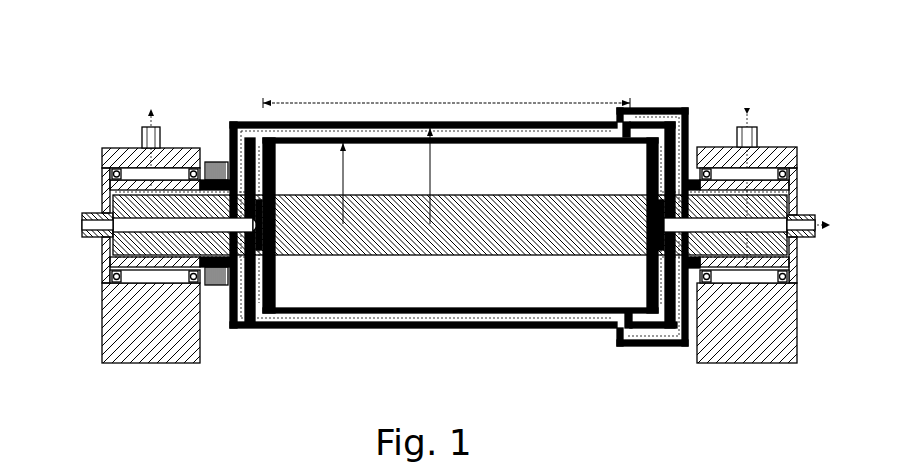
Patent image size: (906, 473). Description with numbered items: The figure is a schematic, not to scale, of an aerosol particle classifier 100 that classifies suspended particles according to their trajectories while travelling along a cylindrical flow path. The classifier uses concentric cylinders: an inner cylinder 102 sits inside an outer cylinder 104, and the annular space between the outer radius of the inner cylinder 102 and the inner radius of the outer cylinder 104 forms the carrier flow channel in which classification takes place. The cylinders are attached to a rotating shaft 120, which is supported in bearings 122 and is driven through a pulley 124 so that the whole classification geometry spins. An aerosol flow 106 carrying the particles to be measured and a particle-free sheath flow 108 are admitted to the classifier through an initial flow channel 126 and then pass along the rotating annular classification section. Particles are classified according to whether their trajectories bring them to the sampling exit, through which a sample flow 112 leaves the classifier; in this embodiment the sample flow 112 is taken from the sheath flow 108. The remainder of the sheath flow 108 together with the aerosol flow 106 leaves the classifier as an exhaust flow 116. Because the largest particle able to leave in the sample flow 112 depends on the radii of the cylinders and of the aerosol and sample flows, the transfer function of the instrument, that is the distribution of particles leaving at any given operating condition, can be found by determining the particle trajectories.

The aerosol particle classifier 100 is at (445, 58).
The inner cylinder 102 is at (468, 314).
The outer cylinder 104 is at (543, 329).
The aerosol flow 106 is at (78, 227).
The sheath flow 108 is at (158, 113).
The sample flow 112 is at (752, 111).
The exhaust flow 116 is at (833, 217).
The rotating shaft 120 is at (385, 257).
The bearings 122 is at (194, 167).
The pulley 124 is at (215, 286).
The initial flow channel 126 is at (237, 304).